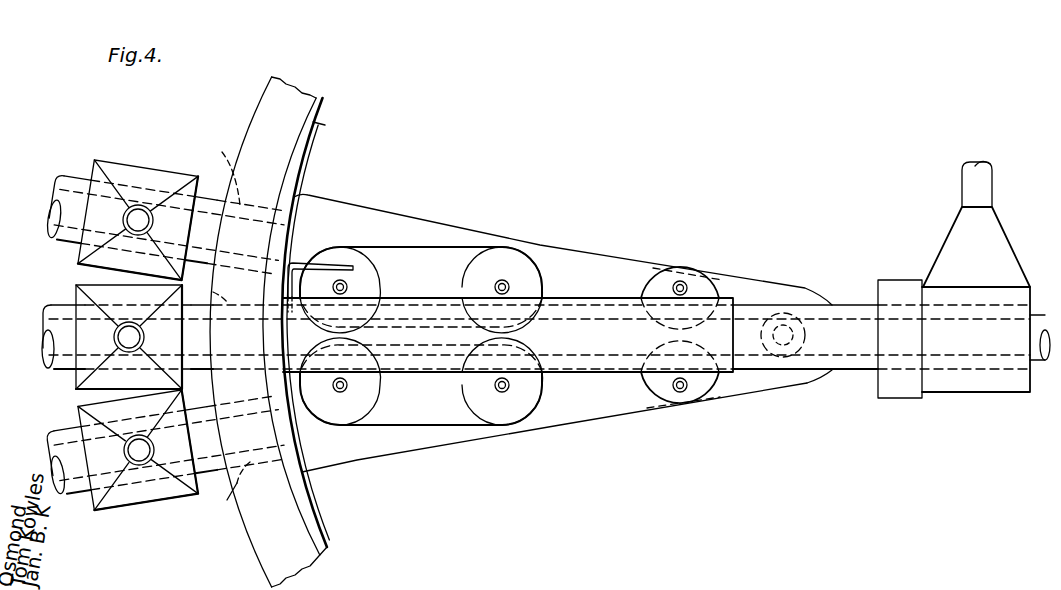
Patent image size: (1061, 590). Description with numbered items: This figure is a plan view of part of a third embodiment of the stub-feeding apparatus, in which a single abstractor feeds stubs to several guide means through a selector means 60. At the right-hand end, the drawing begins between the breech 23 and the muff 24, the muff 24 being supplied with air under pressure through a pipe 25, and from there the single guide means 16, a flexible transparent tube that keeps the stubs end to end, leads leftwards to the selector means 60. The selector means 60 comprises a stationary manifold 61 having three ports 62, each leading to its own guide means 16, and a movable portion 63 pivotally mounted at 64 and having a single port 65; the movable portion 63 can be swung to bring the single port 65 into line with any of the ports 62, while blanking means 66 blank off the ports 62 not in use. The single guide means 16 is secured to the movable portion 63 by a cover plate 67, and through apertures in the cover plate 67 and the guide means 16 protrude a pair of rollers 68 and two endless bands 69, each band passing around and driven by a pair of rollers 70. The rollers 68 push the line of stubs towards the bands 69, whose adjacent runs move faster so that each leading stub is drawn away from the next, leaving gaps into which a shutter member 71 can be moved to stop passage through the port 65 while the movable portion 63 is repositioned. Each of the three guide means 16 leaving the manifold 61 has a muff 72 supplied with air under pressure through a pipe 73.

The guide means 16 is at (82, 182).
The breech 23 is at (1033, 360).
The muff 24 is at (1032, 290).
The pipe 25 is at (977, 183).
The selector means 60 is at (453, 452).
The stationary manifold 61 is at (290, 98).
The ports 62 is at (218, 324).
The movable portion 63 is at (525, 248).
The pivot 64 is at (780, 333).
The single port 65 is at (262, 375).
The blanking means 66 is at (310, 138).
The cover plate 67 is at (600, 377).
The rollers 68 is at (672, 253).
The endless bands 69 is at (400, 247).
The rollers 70 is at (337, 258).
The shutter member 71 is at (297, 260).
The muff 72 is at (100, 223).
The pipes 73 is at (138, 215).